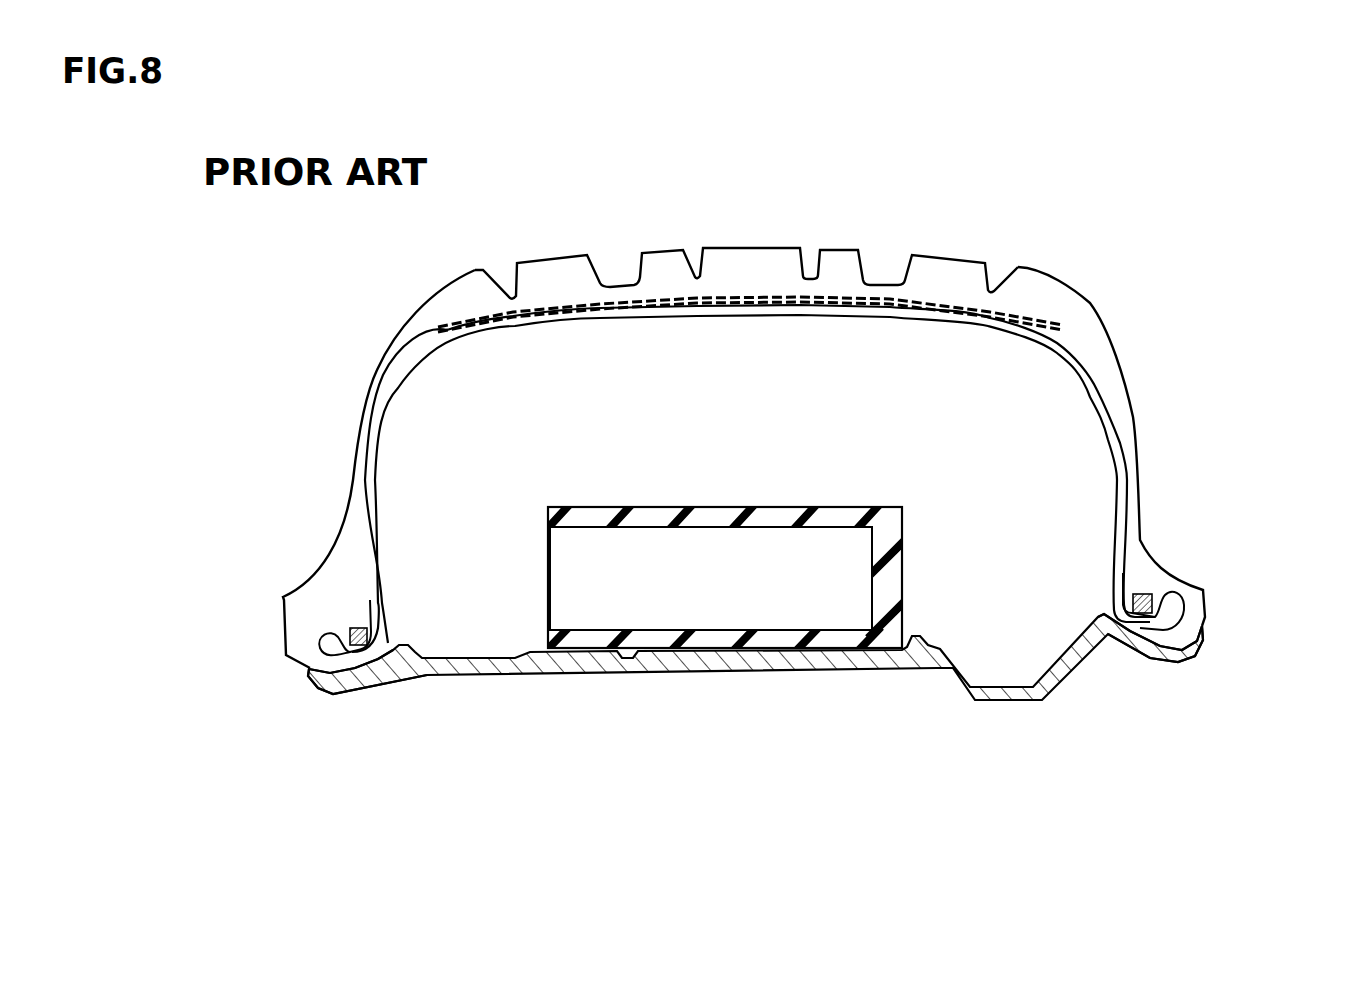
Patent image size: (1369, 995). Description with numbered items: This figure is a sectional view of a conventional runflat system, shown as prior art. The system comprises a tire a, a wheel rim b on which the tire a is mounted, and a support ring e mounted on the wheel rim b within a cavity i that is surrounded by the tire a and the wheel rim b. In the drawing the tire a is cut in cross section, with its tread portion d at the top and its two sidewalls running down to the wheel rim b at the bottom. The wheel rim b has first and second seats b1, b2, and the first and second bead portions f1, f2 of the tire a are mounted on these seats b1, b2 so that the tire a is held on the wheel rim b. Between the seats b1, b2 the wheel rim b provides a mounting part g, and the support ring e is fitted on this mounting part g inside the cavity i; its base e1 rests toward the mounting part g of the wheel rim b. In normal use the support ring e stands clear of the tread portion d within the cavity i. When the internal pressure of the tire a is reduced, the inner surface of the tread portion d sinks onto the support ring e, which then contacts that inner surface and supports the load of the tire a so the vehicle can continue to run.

The tire a is at (744, 484).
The wheel rim b is at (735, 672).
The first seat b1 is at (357, 667).
The second seat b2 is at (1133, 632).
The tread portion d is at (753, 245).
The support ring e is at (745, 596).
The base of support ring e1 is at (768, 648).
The first bead portion f1 is at (277, 620).
The second bead portion f2 is at (1210, 602).
The mounting part g is at (727, 648).
The cavity i is at (733, 441).